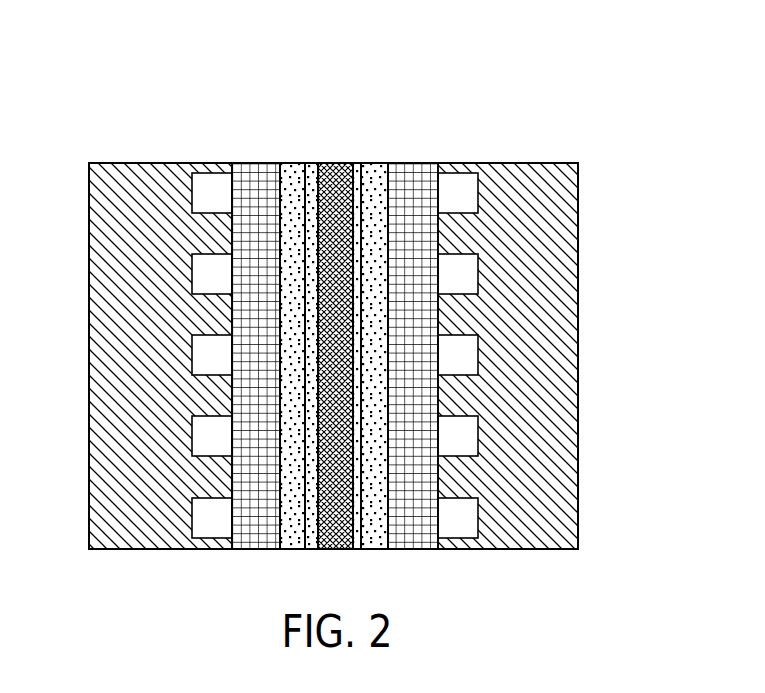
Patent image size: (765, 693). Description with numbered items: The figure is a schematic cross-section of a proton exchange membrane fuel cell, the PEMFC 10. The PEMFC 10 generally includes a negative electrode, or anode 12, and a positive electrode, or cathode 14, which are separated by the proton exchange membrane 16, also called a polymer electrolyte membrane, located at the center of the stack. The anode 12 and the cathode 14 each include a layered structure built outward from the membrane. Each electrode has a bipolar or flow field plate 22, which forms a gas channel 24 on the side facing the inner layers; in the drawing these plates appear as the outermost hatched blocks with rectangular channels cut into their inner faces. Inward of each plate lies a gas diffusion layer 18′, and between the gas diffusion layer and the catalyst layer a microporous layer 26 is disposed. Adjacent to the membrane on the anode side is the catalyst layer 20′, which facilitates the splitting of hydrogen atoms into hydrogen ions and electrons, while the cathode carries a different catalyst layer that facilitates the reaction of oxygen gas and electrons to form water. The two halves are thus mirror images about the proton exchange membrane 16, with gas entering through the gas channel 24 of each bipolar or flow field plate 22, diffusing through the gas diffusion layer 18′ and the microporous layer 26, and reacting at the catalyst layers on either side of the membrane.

The PEMFC 10 is at (607, 80).
The negative electrode (anode) 12 is at (317, 113).
The positive electrode (cathode) 14 is at (578, 113).
The proton exchange membrane 16 is at (333, 172).
The gas diffusion layer 18′ is at (255, 172).
The catalyst layer 20′ is at (313, 172).
The bipolar or flow field plate 22 is at (107, 302).
The gas channel 24 is at (208, 366).
The microporous layer 26 is at (292, 172).